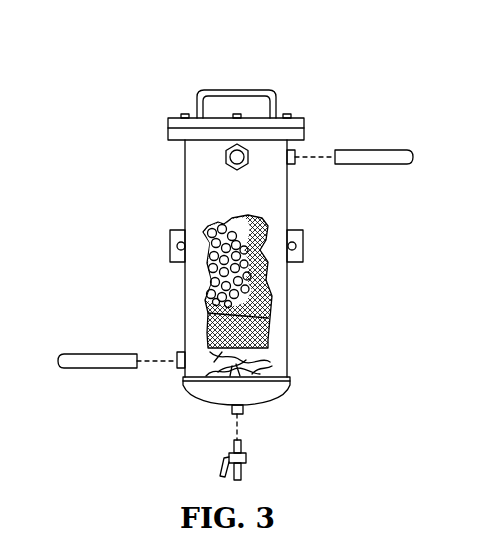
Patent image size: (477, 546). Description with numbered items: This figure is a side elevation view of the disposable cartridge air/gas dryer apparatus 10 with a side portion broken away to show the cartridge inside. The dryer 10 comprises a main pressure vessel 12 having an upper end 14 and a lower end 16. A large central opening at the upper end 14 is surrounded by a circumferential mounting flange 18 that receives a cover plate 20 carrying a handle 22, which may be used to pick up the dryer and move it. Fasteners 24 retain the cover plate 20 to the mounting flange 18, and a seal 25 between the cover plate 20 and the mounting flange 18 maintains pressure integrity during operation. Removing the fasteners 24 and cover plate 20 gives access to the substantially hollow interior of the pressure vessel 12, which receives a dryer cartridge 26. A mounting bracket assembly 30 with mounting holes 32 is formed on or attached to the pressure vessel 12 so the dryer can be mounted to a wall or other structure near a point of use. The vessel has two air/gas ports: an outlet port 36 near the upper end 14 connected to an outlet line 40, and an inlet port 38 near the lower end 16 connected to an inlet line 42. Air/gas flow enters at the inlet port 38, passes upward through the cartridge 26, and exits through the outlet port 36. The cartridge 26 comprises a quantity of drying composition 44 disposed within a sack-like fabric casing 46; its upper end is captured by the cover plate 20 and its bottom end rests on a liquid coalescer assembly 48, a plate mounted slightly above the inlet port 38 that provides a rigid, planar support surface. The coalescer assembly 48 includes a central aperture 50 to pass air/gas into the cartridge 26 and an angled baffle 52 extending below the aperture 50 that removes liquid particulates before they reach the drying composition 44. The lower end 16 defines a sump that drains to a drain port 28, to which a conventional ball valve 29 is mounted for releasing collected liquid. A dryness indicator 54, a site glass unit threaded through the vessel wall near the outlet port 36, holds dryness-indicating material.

The disposable cartridge air/gas dryer apparatus 10 is at (66, 72).
The main pressure vessel 12 is at (158, 302).
The first (upper) end 14 is at (147, 128).
The second (lower) end 16 is at (368, 380).
The circumferential mounting flange 18 is at (168, 138).
The cover plate 20 is at (168, 118).
The handle 22 is at (256, 90).
The fasteners 24 is at (291, 115).
The seal 25 is at (304, 130).
The dryer cartridge 26 is at (276, 289).
The drain port 28 is at (247, 411).
The ball valve 29 is at (247, 460).
The mounting bracket assembly 30 is at (303, 232).
The mounting holes 32 is at (170, 232).
The outlet port 36 is at (297, 164).
The inlet port 38 is at (180, 368).
The outlet line 40 is at (397, 165).
The inlet line 42 is at (73, 368).
The drying composition 44 is at (212, 272).
The sack-like fabric casing 46 is at (212, 327).
The liquid coalescer assembly 48 is at (284, 354).
The central aperture 50 is at (288, 372).
The angled baffle 52 is at (212, 372).
The dryness indicator 54 is at (227, 163).